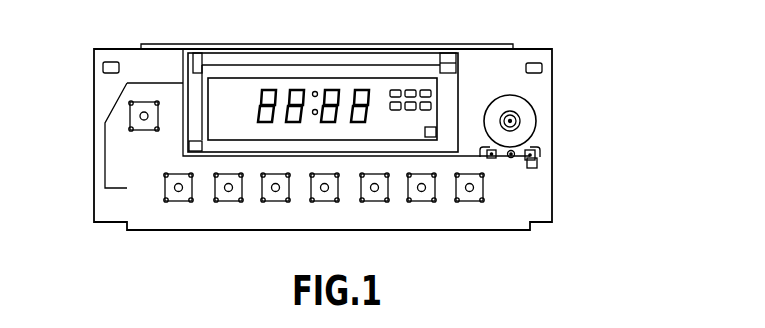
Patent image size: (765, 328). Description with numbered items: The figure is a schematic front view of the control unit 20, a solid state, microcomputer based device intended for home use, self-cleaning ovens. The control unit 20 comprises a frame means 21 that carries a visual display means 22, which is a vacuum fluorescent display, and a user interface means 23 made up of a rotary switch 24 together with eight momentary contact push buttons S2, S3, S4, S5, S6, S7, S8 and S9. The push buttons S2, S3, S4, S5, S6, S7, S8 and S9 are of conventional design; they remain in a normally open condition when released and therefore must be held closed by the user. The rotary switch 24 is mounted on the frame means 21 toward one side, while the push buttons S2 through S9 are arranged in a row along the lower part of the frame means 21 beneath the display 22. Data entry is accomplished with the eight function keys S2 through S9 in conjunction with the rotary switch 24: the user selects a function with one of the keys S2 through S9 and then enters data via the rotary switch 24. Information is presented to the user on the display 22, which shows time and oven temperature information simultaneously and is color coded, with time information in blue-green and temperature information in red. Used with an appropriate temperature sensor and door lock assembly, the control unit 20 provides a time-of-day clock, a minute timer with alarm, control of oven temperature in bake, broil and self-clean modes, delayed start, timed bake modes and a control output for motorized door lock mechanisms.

The control unit 20 is at (566, 89).
The frame means 21 is at (505, 63).
The visual display means 22 is at (433, 115).
The user interface means 23 is at (143, 205).
The rotary switch 24 is at (537, 118).
The momentary contact push button S2 is at (130, 113).
The momentary contact push button S3 is at (275, 201).
The momentary contact push button S4 is at (228, 201).
The momentary contact push button S5 is at (374, 201).
The momentary contact push button S6 is at (178, 201).
The momentary contact push button S7 is at (324, 201).
The momentary contact push button S8 is at (421, 201).
The momentary contact push button S9 is at (469, 201).